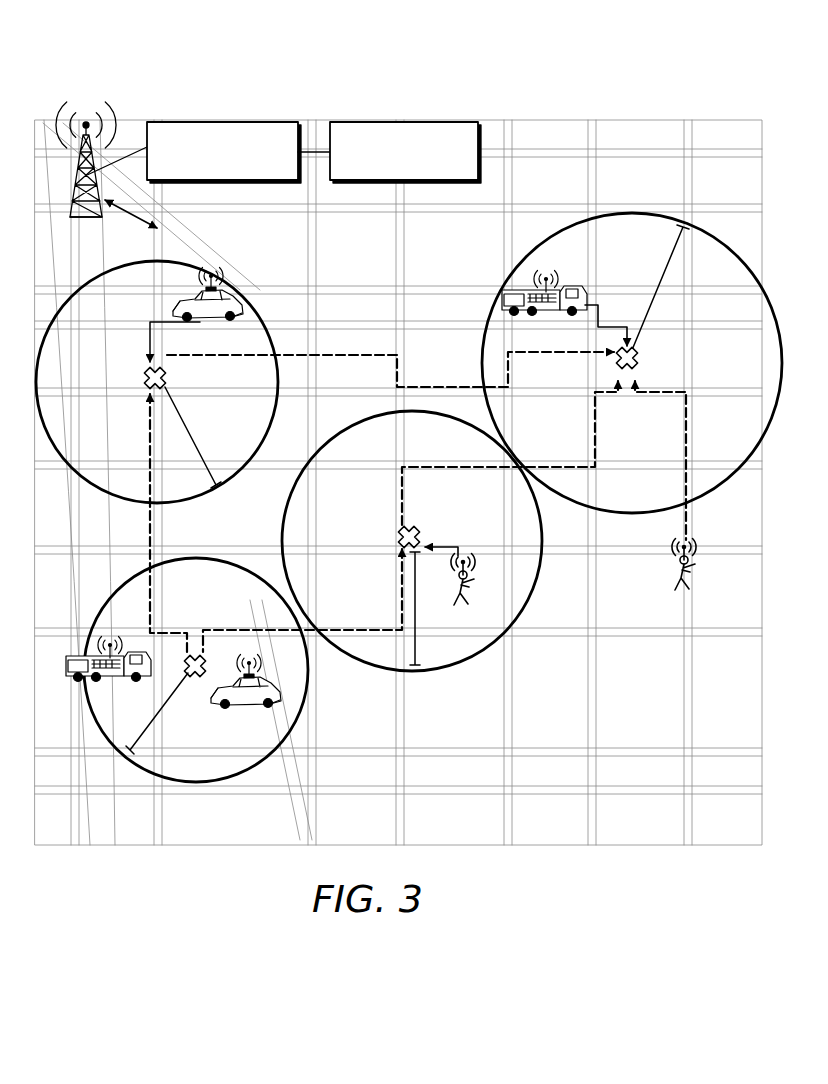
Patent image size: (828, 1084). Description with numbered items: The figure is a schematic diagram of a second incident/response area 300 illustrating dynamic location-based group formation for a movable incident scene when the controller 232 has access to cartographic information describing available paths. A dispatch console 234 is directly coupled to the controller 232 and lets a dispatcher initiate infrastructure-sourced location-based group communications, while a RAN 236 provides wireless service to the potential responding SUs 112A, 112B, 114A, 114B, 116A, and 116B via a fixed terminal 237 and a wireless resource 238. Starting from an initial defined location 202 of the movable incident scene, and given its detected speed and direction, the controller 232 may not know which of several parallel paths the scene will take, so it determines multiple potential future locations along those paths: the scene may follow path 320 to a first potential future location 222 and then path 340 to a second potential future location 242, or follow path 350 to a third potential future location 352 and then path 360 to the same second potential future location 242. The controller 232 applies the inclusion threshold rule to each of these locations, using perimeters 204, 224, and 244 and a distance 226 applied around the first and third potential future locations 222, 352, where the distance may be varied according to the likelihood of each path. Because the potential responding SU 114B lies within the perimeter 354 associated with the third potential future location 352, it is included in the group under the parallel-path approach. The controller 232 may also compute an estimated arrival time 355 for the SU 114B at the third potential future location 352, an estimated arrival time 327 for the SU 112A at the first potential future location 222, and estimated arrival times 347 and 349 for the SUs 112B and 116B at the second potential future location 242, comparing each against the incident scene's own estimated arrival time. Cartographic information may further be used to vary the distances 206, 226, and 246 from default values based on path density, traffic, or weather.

The second incident/response area 300 is at (53, 32).
The controller 232 is at (229, 122).
The dispatch console 234 is at (432, 122).
The RAN 236 is at (62, 214).
The fixed terminal 237 is at (78, 178).
The wireless resource 238 is at (130, 209).
The perimeter 354 is at (243, 285).
The estimated arrival time 355 is at (173, 318).
The potential responding SU 114B is at (235, 318).
The third potential future location 352 is at (146, 374).
The distance 226 is at (197, 430).
The path 350 is at (151, 425).
The path 360 is at (367, 352).
The perimeter 244 is at (662, 215).
The distance 246 is at (680, 228).
The estimated arrival time 349 is at (600, 302).
The potential responding SU 116B is at (500, 297).
The second potential future location 242 is at (618, 358).
The estimated arrival time 347 is at (687, 443).
The path 340 is at (577, 466).
The first potential future location 222 is at (400, 528).
The estimated arrival time 327 is at (443, 545).
The perimeter 224 is at (538, 575).
The path 320 is at (338, 630).
The potential responding SU 112A is at (449, 613).
The potential responding SU 112B is at (698, 593).
The perimeter 204 is at (140, 573).
The initial defined location 202 is at (190, 652).
The potential responding SU 116A is at (132, 679).
The potential responding SU 114A is at (237, 694).
The distance 206 is at (153, 720).